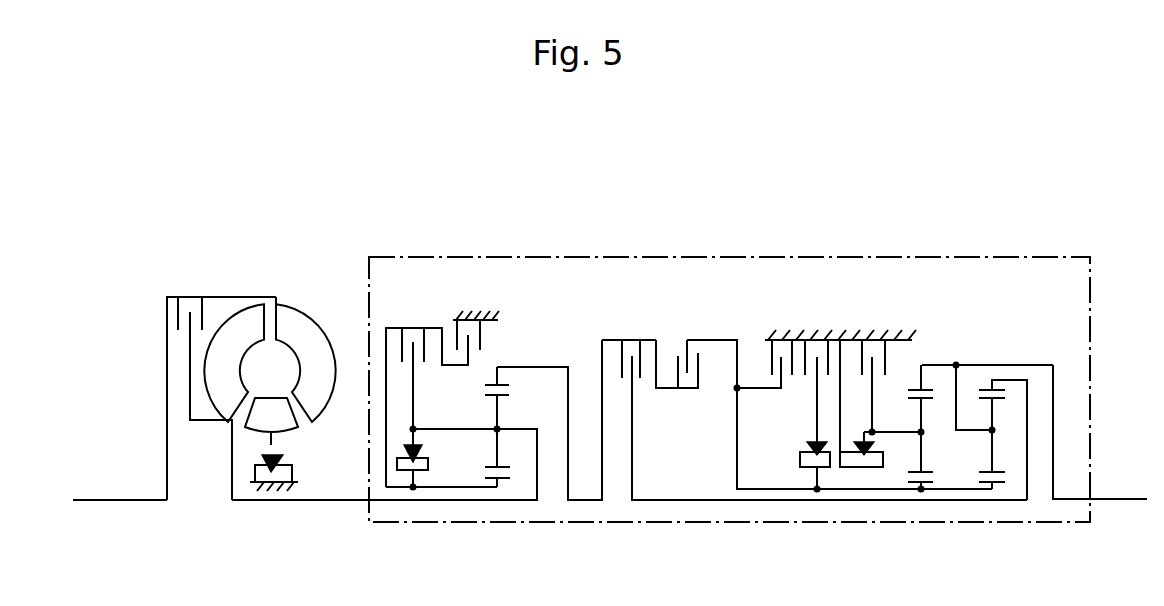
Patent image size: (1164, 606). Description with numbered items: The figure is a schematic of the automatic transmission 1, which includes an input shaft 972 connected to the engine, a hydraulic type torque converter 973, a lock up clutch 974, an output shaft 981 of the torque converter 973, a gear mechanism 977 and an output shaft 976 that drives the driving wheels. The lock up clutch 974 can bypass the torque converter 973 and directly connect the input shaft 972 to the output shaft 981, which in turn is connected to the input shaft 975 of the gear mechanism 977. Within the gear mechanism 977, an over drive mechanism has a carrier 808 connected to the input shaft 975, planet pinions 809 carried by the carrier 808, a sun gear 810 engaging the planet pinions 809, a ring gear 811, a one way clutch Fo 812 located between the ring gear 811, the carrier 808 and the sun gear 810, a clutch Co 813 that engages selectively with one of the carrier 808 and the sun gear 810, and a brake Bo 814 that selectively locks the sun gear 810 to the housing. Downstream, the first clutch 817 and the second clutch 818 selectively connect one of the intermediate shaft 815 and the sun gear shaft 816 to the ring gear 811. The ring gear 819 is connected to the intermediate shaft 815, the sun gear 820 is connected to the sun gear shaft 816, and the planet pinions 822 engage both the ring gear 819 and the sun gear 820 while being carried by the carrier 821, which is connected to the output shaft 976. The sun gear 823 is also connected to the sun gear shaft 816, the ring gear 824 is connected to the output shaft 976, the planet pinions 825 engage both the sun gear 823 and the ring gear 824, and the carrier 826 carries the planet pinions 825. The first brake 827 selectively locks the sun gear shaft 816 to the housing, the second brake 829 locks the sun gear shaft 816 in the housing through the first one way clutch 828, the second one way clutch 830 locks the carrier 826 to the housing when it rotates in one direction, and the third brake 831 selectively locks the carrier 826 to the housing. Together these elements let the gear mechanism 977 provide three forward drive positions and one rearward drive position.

The automatic transmission 1 is at (578, 212).
The input shaft 972 is at (118, 500).
The hydraulic type torque converter 973 is at (293, 303).
The lock up clutch 974 is at (178, 322).
The input shaft 975 is at (340, 500).
The output shaft 976 is at (1106, 499).
The gear mechanism 977 is at (950, 257).
The output shaft 981 is at (288, 500).
The carrier 808 is at (519, 429).
The planet pinions 809 is at (510, 460).
The sun gear 810 is at (490, 478).
The ring gear 811 is at (487, 383).
The one way clutch Fo 812 is at (405, 470).
The clutch Co 813 is at (402, 347).
The brake Bo 814 is at (457, 345).
The intermediate shaft 815 is at (660, 500).
The sun gear shaft 816 is at (742, 489).
The clutch C1 817 is at (618, 360).
The clutch C2 818 is at (675, 365).
The ring gear 819 is at (988, 380).
The sun gear 820 is at (998, 482).
The carrier 821 is at (958, 385).
The planet pinions 822 is at (992, 417).
The sun gear 823 is at (912, 487).
The ring gear 824 is at (911, 387).
The planet pinions 825 is at (921, 447).
The carrier 826 is at (898, 433).
The brake B1 827 is at (770, 367).
The one way clutch F1 828 is at (801, 468).
The brake B2 829 is at (802, 355).
The one way clutch F2 830 is at (886, 467).
The brake B3 831 is at (858, 355).